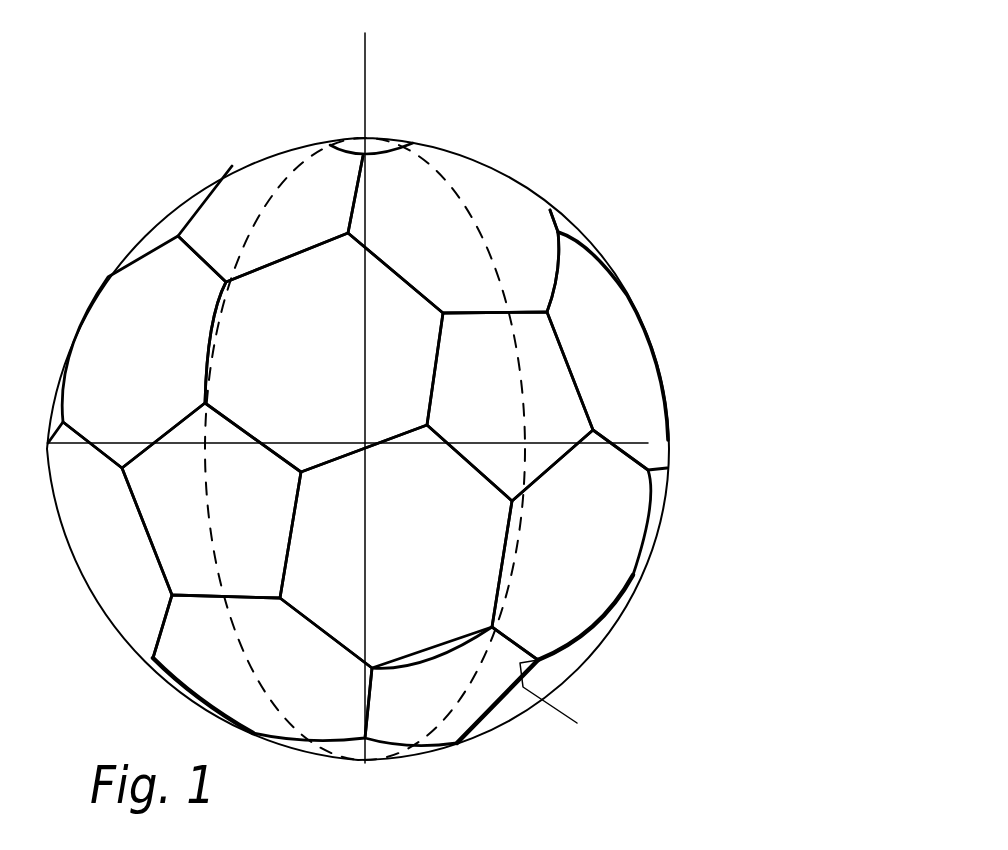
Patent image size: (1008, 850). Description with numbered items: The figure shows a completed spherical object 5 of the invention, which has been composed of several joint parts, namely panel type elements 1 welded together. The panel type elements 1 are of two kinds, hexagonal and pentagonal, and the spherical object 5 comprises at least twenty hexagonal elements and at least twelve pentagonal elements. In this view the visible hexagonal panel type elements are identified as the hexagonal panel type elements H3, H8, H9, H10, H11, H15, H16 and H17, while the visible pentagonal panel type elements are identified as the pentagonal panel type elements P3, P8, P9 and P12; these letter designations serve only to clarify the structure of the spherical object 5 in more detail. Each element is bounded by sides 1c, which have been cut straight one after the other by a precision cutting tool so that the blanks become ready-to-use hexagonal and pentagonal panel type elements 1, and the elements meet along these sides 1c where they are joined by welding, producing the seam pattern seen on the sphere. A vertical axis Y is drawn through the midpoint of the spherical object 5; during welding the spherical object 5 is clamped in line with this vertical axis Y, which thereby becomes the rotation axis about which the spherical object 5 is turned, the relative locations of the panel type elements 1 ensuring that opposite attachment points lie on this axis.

The spherical object 5 is at (653, 312).
The vertical axis Y is at (365, 68).
The panel type element 1 is at (570, 620).
The side 1c is at (565, 643).
The pentagonal panel type element P3 is at (270, 219).
The hexagonal panel type element H3 is at (453, 234).
The hexagonal panel type element H10 is at (144, 352).
The hexagonal panel type element H9 is at (324, 352).
The pentagonal panel type element P8 is at (510, 406).
The hexagonal panel type element H8 is at (607, 340).
The pentagonal panel type element P9 is at (211, 500).
The hexagonal panel type element H11 is at (110, 540).
The hexagonal panel type element H16 is at (396, 546).
The hexagonal panel type element H15 is at (571, 545).
The hexagonal panel type element H17 is at (262, 668).
The pentagonal panel type element P12 is at (451, 686).